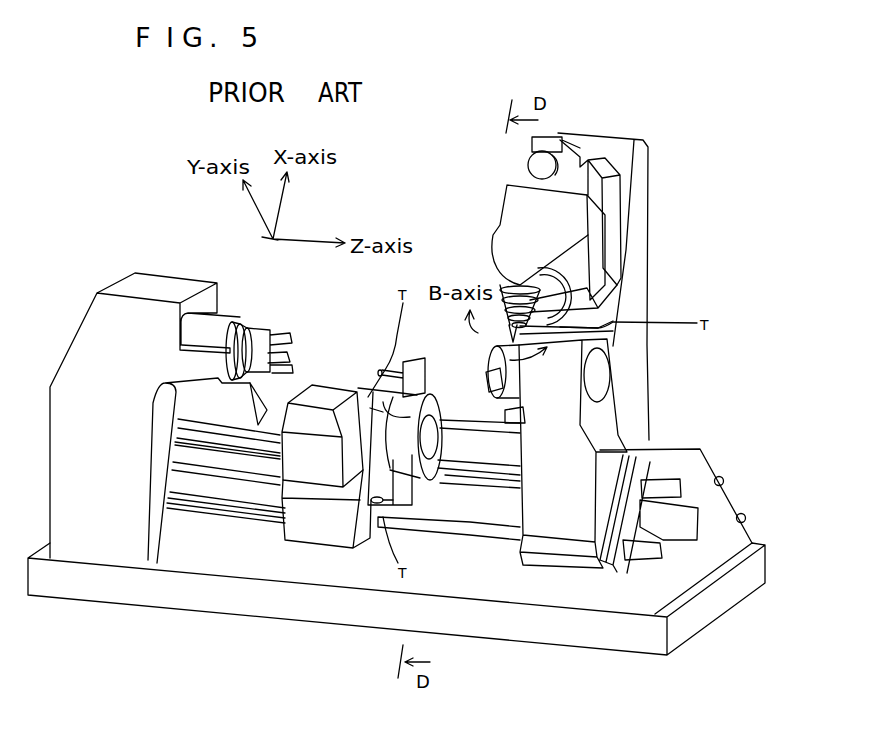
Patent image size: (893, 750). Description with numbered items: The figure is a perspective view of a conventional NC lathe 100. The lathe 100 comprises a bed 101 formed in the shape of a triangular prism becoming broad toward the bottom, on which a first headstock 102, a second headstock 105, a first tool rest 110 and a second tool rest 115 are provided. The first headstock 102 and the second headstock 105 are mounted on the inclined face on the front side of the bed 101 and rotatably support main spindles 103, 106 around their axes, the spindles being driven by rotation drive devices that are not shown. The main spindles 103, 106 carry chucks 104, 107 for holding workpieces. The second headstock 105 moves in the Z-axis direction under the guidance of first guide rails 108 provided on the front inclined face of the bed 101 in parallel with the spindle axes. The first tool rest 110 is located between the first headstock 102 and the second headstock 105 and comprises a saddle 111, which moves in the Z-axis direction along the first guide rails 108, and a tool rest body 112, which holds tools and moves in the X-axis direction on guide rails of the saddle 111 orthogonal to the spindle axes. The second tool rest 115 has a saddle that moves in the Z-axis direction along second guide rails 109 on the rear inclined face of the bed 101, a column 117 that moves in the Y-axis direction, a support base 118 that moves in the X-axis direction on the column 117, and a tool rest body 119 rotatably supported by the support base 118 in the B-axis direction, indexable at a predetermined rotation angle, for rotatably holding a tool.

The lathe 100 is at (125, 206).
The bed 101 is at (220, 607).
The first headstock 102 is at (172, 282).
The main spindle 103 is at (250, 316).
The chuck 104 is at (262, 333).
The second headstock 105 is at (527, 508).
The main spindle 106 is at (493, 392).
The chuck 107 is at (490, 367).
The first guide rails 108 is at (670, 483).
The second guide rails 109 is at (724, 481).
The first tool rest 110 is at (356, 588).
The saddle 111 is at (312, 555).
The tool rest body 112 is at (330, 393).
The second tool rest 115 is at (456, 237).
The column 117 is at (633, 275).
The support base 118 is at (613, 238).
The tool rest body 119 is at (543, 290).